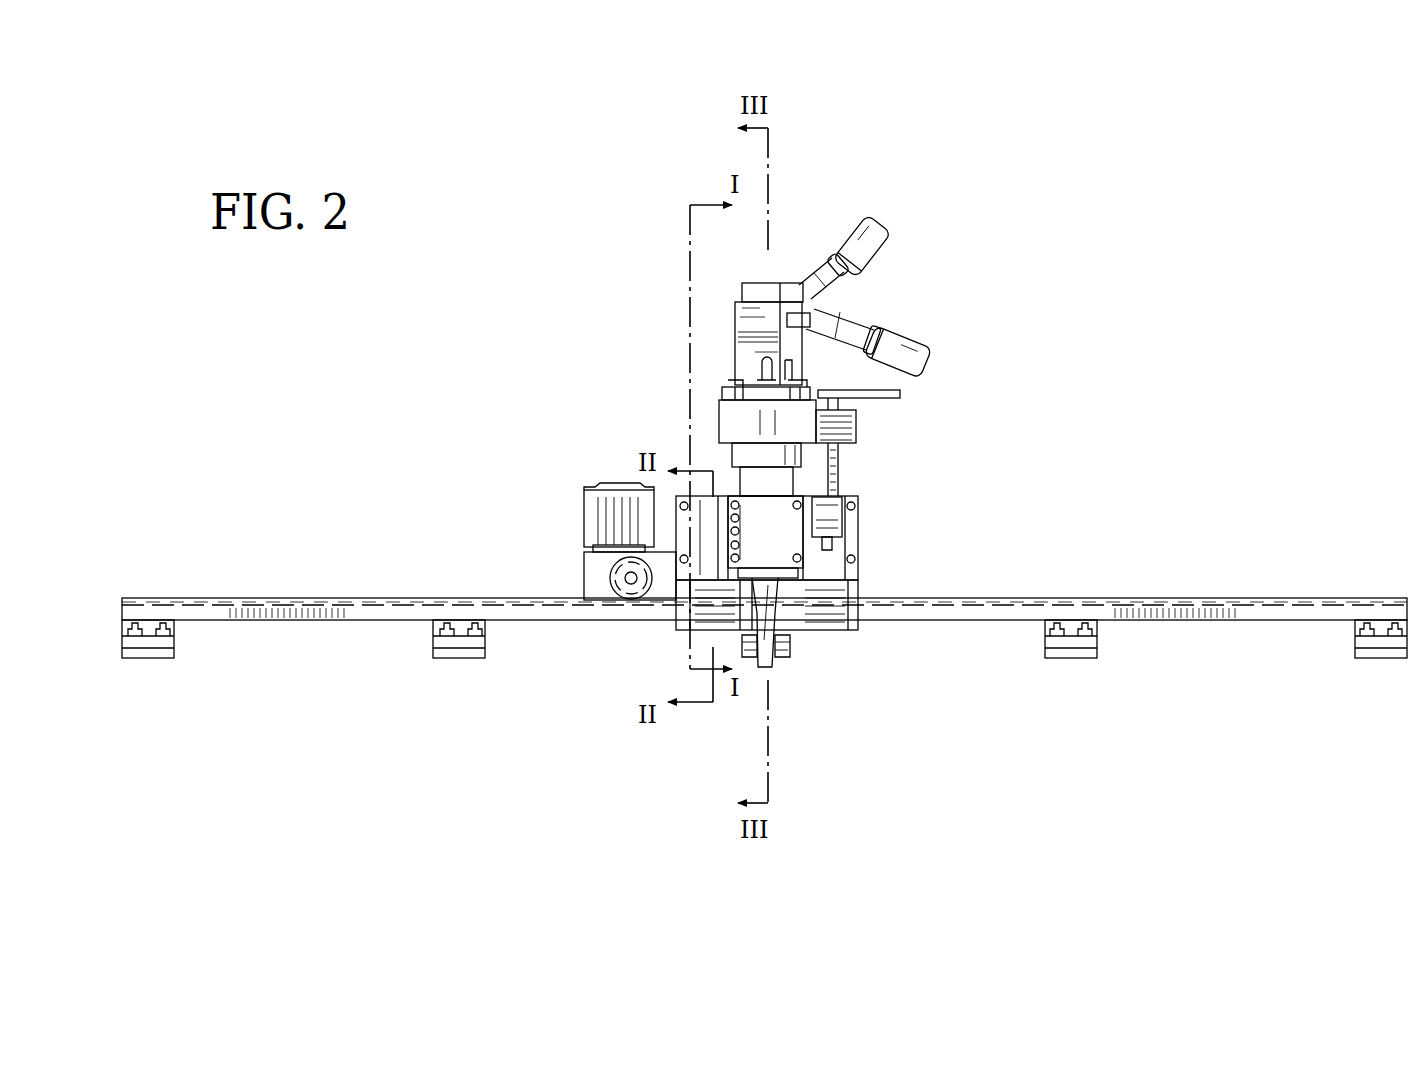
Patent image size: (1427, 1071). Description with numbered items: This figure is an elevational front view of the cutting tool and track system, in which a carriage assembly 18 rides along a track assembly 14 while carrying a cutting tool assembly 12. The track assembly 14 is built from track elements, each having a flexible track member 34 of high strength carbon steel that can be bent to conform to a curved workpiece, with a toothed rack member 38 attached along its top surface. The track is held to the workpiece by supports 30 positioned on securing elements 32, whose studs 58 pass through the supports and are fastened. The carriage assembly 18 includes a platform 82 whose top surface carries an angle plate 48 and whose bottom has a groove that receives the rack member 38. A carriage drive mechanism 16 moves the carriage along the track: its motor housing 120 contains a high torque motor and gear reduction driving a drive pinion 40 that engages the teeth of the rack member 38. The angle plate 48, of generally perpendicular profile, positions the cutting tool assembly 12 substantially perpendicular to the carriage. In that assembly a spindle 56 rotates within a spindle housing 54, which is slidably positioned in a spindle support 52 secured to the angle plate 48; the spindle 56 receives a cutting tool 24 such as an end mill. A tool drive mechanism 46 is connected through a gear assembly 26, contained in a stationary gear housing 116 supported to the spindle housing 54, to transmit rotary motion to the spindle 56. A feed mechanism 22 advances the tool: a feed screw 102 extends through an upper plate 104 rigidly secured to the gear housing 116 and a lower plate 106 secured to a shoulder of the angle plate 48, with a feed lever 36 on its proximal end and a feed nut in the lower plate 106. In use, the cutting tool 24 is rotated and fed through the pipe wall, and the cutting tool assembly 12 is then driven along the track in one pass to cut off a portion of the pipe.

The cutting tool assembly 12 is at (712, 463).
The track assembly 14 is at (1205, 590).
The carriage drive mechanism 16 is at (590, 502).
The carriage assembly 18 is at (660, 622).
The feed mechanism 22 is at (862, 425).
The cutting tool 24 is at (776, 665).
The gear assembly 26 is at (718, 408).
The support 30 is at (1046, 648).
The securing element 32 is at (1050, 650).
The track member 34 is at (1266, 605).
The feed lever 36 is at (905, 398).
The rack member 38 is at (1299, 598).
The drive pinion 40 is at (612, 585).
The tool drive mechanism 46 is at (737, 320).
The angle plate 48 is at (856, 548).
The spindle support 52 is at (787, 540).
The spindle housing 54 is at (840, 480).
The spindle 56 is at (808, 600).
The stud 58 is at (1097, 630).
The platform 82 is at (840, 626).
The feed screw 102 is at (917, 407).
The upper plate 104 is at (870, 440).
The lower plate 106 is at (858, 518).
The gear housing 116 is at (718, 395).
The motor housing 120 is at (615, 542).